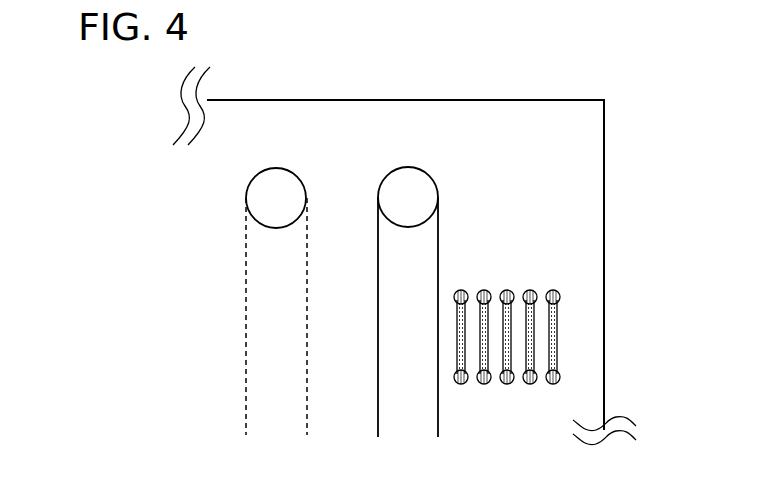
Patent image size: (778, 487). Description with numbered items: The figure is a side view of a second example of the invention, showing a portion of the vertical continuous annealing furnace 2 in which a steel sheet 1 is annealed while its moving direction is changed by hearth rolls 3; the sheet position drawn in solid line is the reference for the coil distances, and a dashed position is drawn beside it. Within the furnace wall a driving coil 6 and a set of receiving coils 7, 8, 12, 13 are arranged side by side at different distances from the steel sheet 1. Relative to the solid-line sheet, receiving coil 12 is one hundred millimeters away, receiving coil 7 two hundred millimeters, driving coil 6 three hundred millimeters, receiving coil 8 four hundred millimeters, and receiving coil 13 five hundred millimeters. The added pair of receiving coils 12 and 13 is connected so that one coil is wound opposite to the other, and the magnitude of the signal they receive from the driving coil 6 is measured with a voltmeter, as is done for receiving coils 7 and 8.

The steel sheet 1 is at (378, 313).
The vertical continuous annealing furnace 2 is at (582, 110).
The hearth roll 3 is at (282, 185).
The driving coil 6 is at (507, 289).
The receiving coil 7 is at (483, 385).
The receiving coil 8 is at (530, 385).
The receiving coil 12 is at (461, 289).
The receiving coil 13 is at (553, 289).